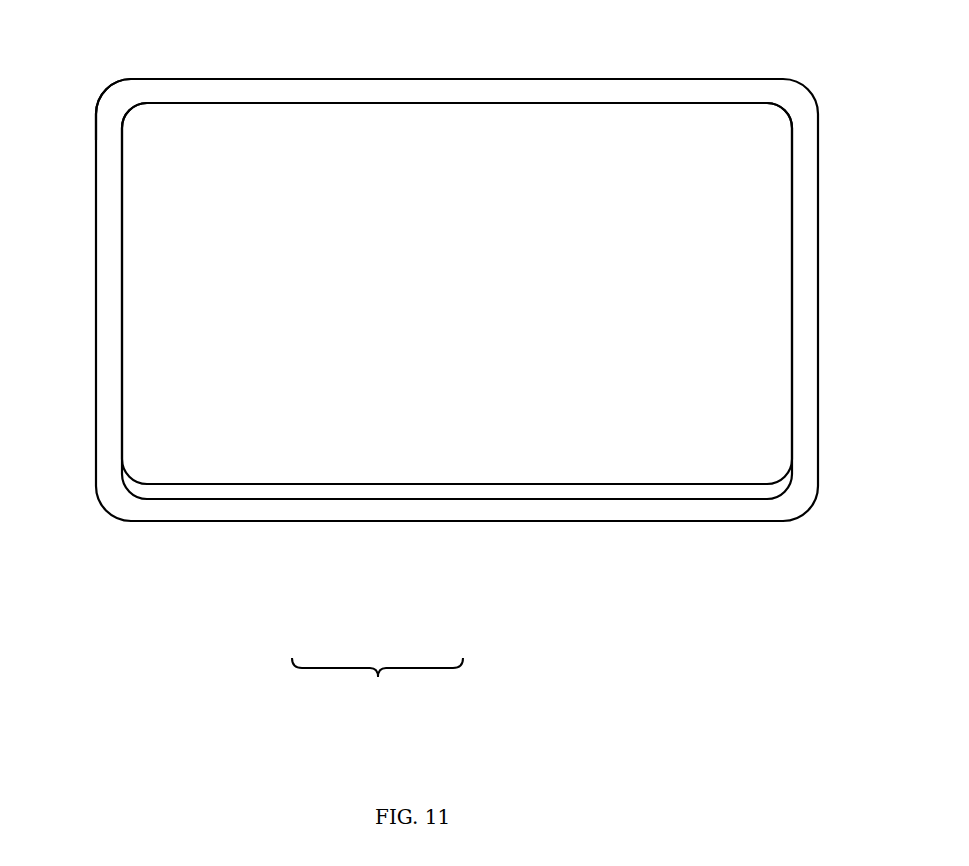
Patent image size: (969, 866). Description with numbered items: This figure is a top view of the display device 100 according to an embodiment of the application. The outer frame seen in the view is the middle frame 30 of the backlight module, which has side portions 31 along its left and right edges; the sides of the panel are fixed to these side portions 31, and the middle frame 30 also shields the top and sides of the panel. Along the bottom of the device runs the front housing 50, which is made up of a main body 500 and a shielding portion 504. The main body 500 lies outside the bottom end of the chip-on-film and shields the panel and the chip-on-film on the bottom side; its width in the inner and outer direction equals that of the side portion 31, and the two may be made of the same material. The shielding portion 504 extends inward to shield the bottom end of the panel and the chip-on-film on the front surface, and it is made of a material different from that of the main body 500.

The middle frame 30 is at (487, 64).
The side portion 31 is at (115, 160).
The front housing 50 is at (377, 688).
The main body 500 is at (457, 500).
The shielding portion 504 is at (277, 485).
The electronic device 100 is at (607, 720).